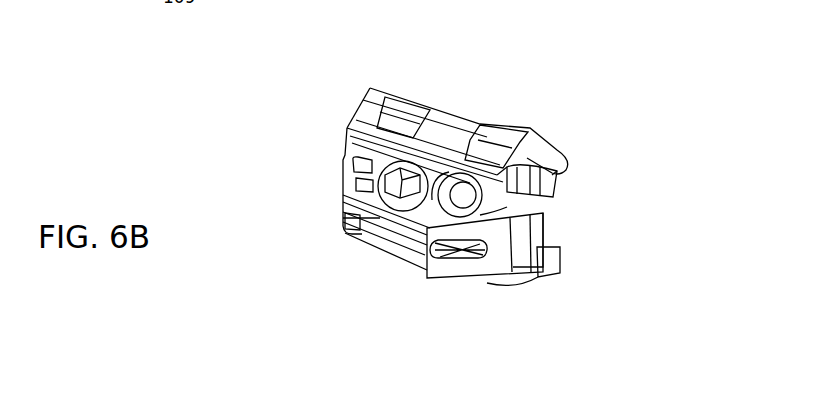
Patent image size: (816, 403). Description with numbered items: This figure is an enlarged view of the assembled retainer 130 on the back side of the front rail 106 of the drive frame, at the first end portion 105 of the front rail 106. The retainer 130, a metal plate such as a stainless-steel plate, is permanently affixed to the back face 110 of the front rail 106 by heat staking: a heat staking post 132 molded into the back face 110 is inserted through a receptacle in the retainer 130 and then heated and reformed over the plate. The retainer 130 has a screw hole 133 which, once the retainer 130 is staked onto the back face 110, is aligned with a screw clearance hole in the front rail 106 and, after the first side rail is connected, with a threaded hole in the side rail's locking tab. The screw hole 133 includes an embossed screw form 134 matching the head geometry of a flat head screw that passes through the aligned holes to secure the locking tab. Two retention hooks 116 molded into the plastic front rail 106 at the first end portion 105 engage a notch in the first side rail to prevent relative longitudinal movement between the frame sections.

The first end portion 105 is at (263, 143).
The front rail 106 is at (400, 97).
The back face 110 is at (378, 204).
The retention hooks 116 is at (550, 183).
The retainer 130 is at (437, 170).
The heat staking post 132 is at (400, 176).
The screw hole 133 is at (458, 200).
The embossed screw form 134 is at (383, 218).